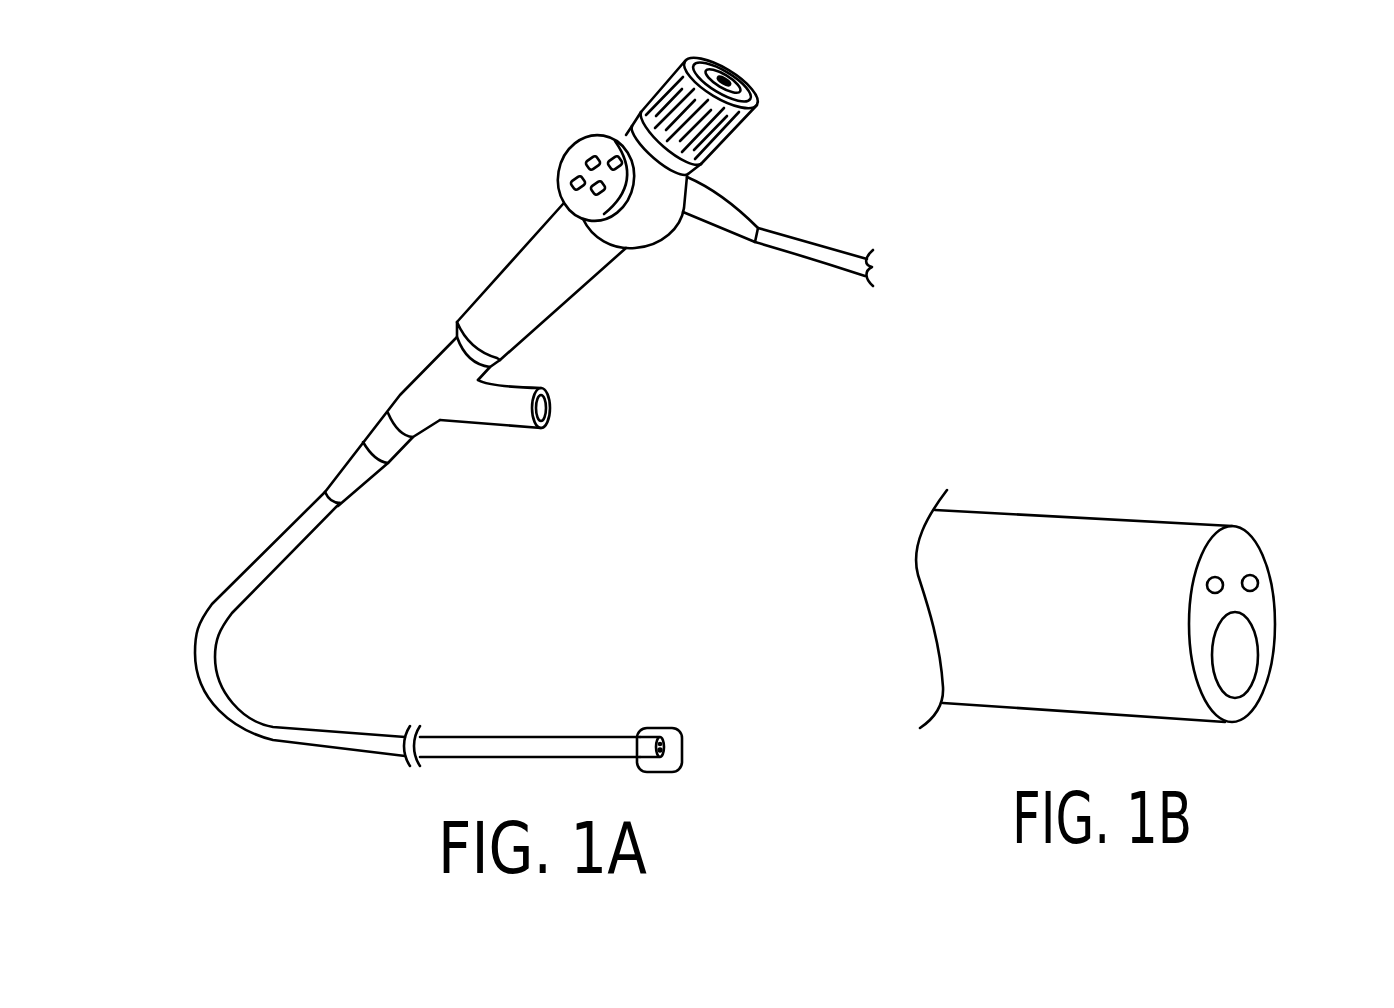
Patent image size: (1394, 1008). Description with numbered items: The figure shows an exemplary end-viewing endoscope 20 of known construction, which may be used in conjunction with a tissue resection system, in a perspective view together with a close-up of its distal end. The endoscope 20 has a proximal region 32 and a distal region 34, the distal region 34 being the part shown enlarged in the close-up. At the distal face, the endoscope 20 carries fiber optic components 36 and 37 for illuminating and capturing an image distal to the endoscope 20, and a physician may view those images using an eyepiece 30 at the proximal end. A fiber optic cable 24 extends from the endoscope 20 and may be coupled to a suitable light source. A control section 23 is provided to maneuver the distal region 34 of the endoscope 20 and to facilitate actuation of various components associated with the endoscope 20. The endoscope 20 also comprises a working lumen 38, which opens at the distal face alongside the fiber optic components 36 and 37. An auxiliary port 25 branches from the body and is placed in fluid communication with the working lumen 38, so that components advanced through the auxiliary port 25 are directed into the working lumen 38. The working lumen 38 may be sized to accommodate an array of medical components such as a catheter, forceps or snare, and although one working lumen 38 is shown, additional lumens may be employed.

In FIG. 1A, the endoscope 20 is at (466, 270).
In FIG. 1A, the control section 23 is at (574, 167).
In FIG. 1A, the fiber optic cable 24 is at (814, 260).
In FIG. 1A, the auxiliary port 25 is at (515, 436).
In FIG. 1A, the eyepiece 30 is at (735, 72).
In FIG. 1A, the proximal region 32 is at (306, 496).
In FIG. 1A, the distal region 34 is at (635, 730).
In FIG. 1B, the distal region 34 is at (1106, 501).
In FIG. 1B, the fiber optic component 36 is at (1219, 577).
In FIG. 1B, the fiber optic component 37 is at (1254, 580).
In FIG. 1B, the working lumen 38 is at (1240, 656).